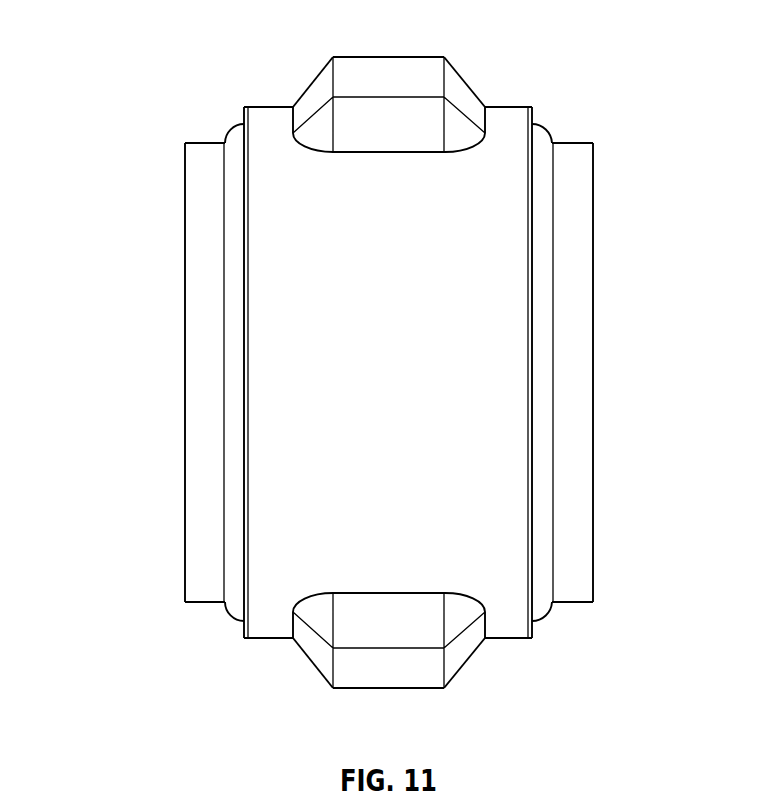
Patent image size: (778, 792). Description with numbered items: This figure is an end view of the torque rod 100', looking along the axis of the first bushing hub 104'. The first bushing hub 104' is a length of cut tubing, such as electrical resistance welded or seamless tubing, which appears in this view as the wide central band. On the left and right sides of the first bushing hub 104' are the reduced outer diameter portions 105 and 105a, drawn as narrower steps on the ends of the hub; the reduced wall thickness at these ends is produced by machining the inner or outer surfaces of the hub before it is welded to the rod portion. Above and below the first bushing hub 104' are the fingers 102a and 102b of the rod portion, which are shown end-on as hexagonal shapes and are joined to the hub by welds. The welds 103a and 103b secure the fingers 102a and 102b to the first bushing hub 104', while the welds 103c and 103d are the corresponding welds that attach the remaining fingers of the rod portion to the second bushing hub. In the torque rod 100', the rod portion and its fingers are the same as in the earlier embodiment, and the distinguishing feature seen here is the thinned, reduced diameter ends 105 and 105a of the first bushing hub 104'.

The torque rod 100' is at (354, 375).
The finger 102a is at (392, 67).
The finger 102b is at (393, 672).
The weld 103a is at (313, 652).
The weld 103b is at (463, 652).
The weld 103c is at (467, 87).
The weld 103d is at (312, 88).
The first bushing hub 104' is at (364, 369).
The end 105 is at (203, 328).
The reduced outer diameter portion 105a is at (572, 328).